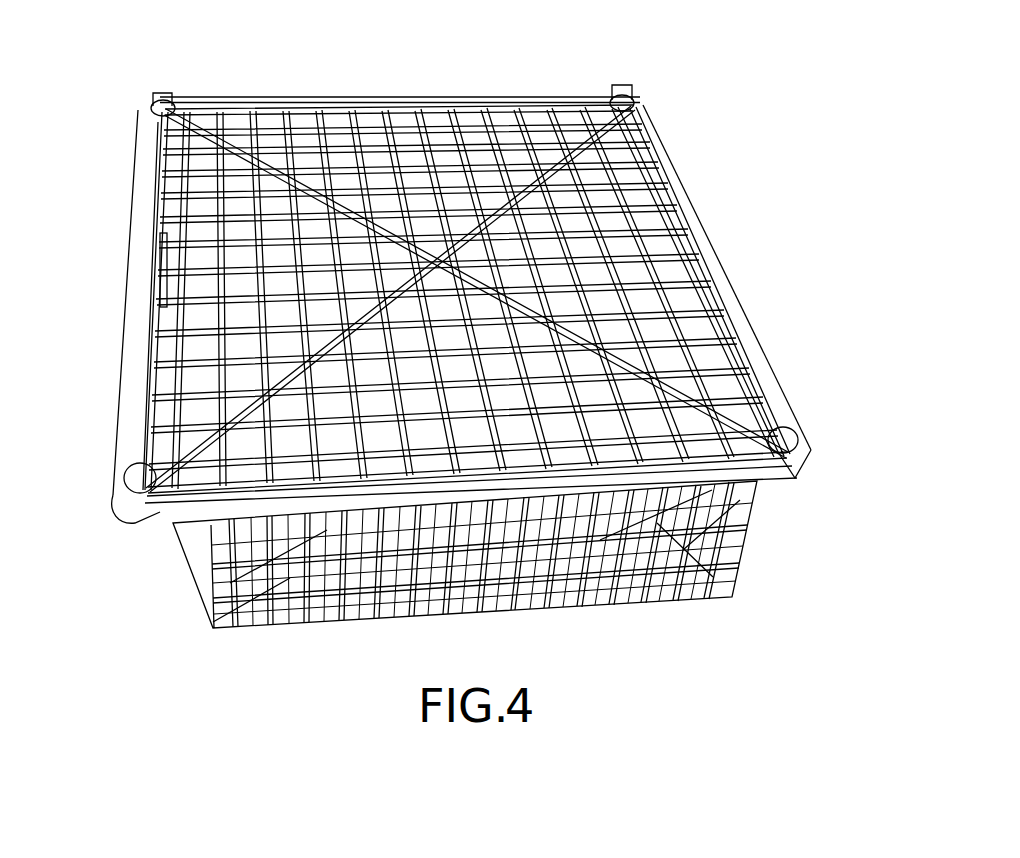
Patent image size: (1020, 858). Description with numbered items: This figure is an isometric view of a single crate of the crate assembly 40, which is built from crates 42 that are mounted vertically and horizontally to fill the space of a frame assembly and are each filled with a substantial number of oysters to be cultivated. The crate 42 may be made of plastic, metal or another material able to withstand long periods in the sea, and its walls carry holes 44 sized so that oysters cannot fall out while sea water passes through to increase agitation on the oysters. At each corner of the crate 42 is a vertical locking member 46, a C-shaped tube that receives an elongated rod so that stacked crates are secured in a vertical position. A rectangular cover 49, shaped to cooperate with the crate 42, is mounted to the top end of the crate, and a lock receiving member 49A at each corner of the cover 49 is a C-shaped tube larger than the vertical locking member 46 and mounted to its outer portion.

The crate assembly 40 is at (125, 58).
The crate 42 is at (162, 272).
The holes 44 is at (738, 570).
The vertical locking member 46 is at (633, 114).
The cover 49 is at (712, 283).
The lock receiving member 49A is at (790, 470).